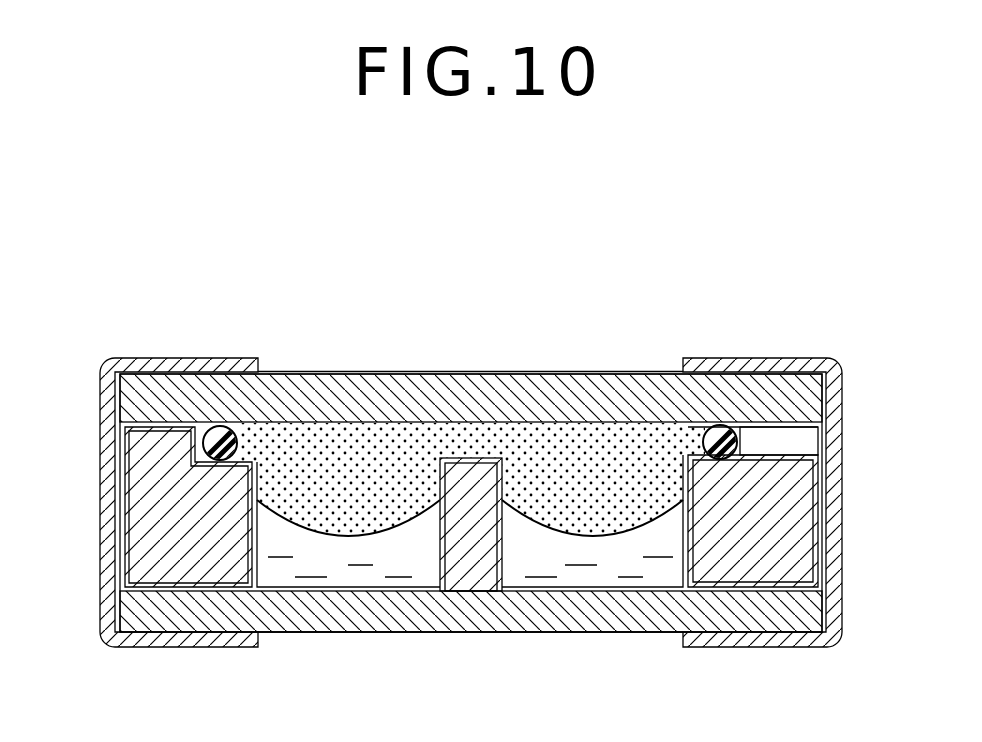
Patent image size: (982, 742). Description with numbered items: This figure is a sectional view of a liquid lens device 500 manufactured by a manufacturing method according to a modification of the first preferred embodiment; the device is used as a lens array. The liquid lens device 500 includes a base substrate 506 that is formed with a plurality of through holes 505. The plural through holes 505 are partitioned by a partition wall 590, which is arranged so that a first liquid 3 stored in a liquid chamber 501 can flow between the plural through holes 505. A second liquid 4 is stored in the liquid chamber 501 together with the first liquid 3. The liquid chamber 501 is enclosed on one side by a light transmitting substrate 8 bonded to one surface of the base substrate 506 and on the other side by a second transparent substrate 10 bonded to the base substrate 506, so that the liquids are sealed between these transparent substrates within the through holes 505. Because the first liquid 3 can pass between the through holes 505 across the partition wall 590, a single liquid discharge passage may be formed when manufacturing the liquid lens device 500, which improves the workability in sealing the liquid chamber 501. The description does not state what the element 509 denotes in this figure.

The liquid lens device 500 is at (478, 468).
The second transparent substrate 10 is at (332, 385).
The light transmitting substrate 8 is at (205, 612).
The first liquid 3 is at (413, 438).
The second liquid 4 is at (547, 560).
The liquid chamber 501 is at (605, 458).
The through holes 505 is at (267, 565).
The base substrate 506 is at (162, 526).
The bottom plate 509 is at (372, 640).
The partition wall 590 is at (468, 580).